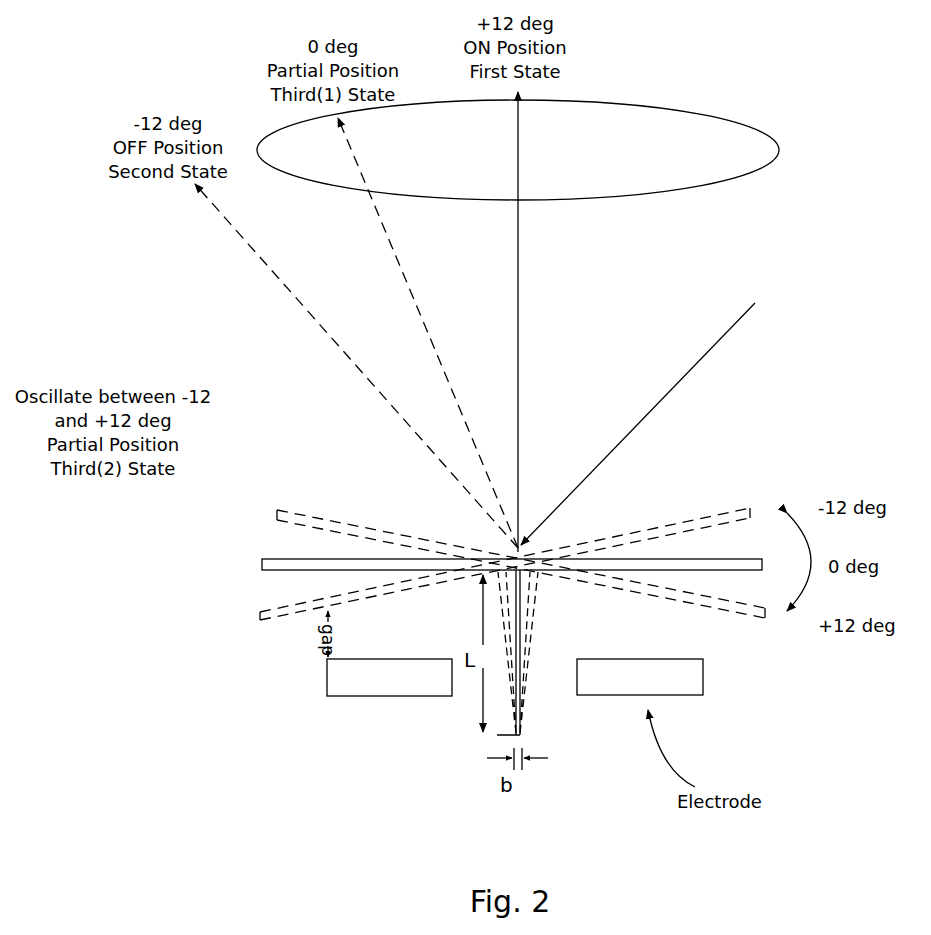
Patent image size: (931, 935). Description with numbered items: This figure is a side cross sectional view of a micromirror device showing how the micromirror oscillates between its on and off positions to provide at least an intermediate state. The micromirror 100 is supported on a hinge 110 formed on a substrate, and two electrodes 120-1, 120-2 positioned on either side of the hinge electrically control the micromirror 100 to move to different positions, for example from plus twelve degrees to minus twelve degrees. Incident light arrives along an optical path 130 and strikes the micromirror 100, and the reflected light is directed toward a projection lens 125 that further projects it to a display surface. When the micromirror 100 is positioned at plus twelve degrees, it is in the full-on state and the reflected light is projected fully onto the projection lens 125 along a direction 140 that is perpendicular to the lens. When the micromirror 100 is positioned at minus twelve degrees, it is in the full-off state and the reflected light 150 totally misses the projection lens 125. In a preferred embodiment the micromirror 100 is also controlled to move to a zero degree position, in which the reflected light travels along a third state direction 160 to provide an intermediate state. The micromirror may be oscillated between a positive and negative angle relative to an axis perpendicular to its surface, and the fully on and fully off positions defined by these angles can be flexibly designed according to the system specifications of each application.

The micromirror 100 is at (277, 564).
The hinge 110 is at (522, 675).
The electrode 120-1 is at (692, 689).
The electrode 120-2 is at (345, 677).
The projection lens 125 is at (755, 152).
The optical path 130 is at (710, 350).
The direction 140 is at (520, 300).
The reflected light 150 is at (270, 268).
The third state direction 160 is at (402, 277).